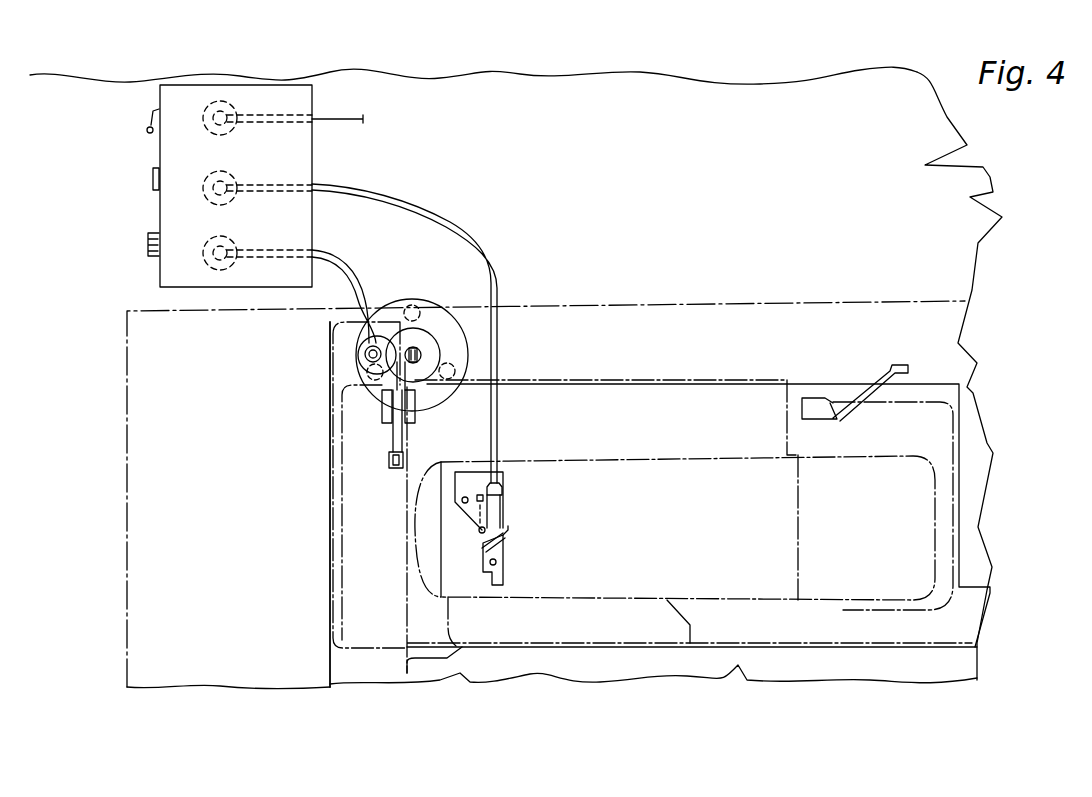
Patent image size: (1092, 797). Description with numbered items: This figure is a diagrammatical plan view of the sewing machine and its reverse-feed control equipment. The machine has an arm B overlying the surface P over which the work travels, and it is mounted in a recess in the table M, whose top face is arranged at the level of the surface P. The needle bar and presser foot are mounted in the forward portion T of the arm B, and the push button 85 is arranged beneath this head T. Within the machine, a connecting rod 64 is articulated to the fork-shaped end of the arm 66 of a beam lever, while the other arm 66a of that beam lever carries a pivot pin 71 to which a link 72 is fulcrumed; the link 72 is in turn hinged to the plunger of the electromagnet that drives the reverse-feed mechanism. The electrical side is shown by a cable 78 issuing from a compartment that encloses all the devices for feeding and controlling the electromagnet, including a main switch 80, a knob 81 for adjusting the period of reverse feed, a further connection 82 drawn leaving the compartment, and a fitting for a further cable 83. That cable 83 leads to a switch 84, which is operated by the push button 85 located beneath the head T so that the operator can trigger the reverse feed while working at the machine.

The connecting rod 64 is at (397, 470).
The arm of beam lever 66 is at (397, 441).
The other arm of beam lever 66a is at (408, 368).
The pivot pin 71 is at (423, 357).
The link 72 is at (423, 330).
The cable 78 is at (347, 288).
The main switch 80 is at (148, 126).
The knob 81 is at (147, 243).
The rod 82 is at (359, 118).
The cable 83 is at (405, 207).
The switch 84 is at (497, 514).
The push button 85 is at (500, 573).
The arm B is at (622, 490).
The forward portion of the arm T is at (407, 536).
The surface P is at (333, 583).
The table M is at (715, 176).